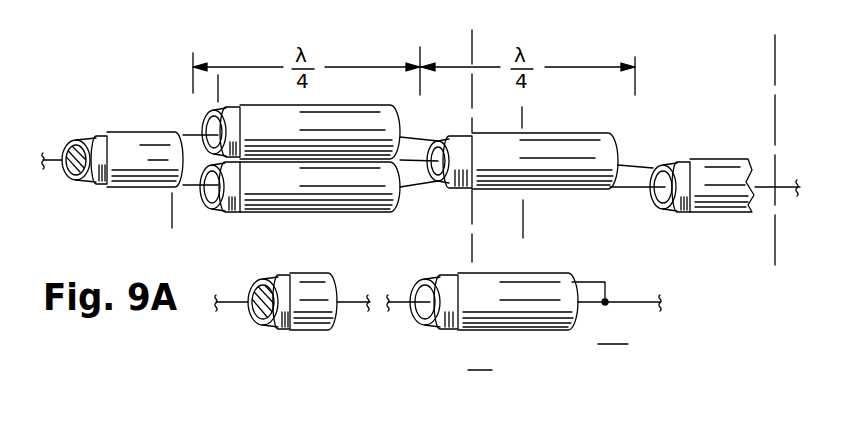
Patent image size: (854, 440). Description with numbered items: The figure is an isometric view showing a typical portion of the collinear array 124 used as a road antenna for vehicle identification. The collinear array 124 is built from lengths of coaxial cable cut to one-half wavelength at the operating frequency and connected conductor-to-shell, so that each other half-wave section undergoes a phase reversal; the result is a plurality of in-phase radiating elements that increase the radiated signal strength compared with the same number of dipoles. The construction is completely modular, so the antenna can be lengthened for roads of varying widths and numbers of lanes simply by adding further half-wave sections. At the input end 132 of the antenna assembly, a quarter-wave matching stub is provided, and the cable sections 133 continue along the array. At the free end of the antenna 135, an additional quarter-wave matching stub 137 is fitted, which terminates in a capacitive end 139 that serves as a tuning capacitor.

The collinear array 124 is at (285, 213).
The input end 132 is at (107, 188).
The coaxial cable section 133 is at (500, 190).
The free end of the antenna 135 is at (280, 327).
The quarter-wave matching stub 137 is at (505, 272).
The capacitive end 139 is at (638, 290).